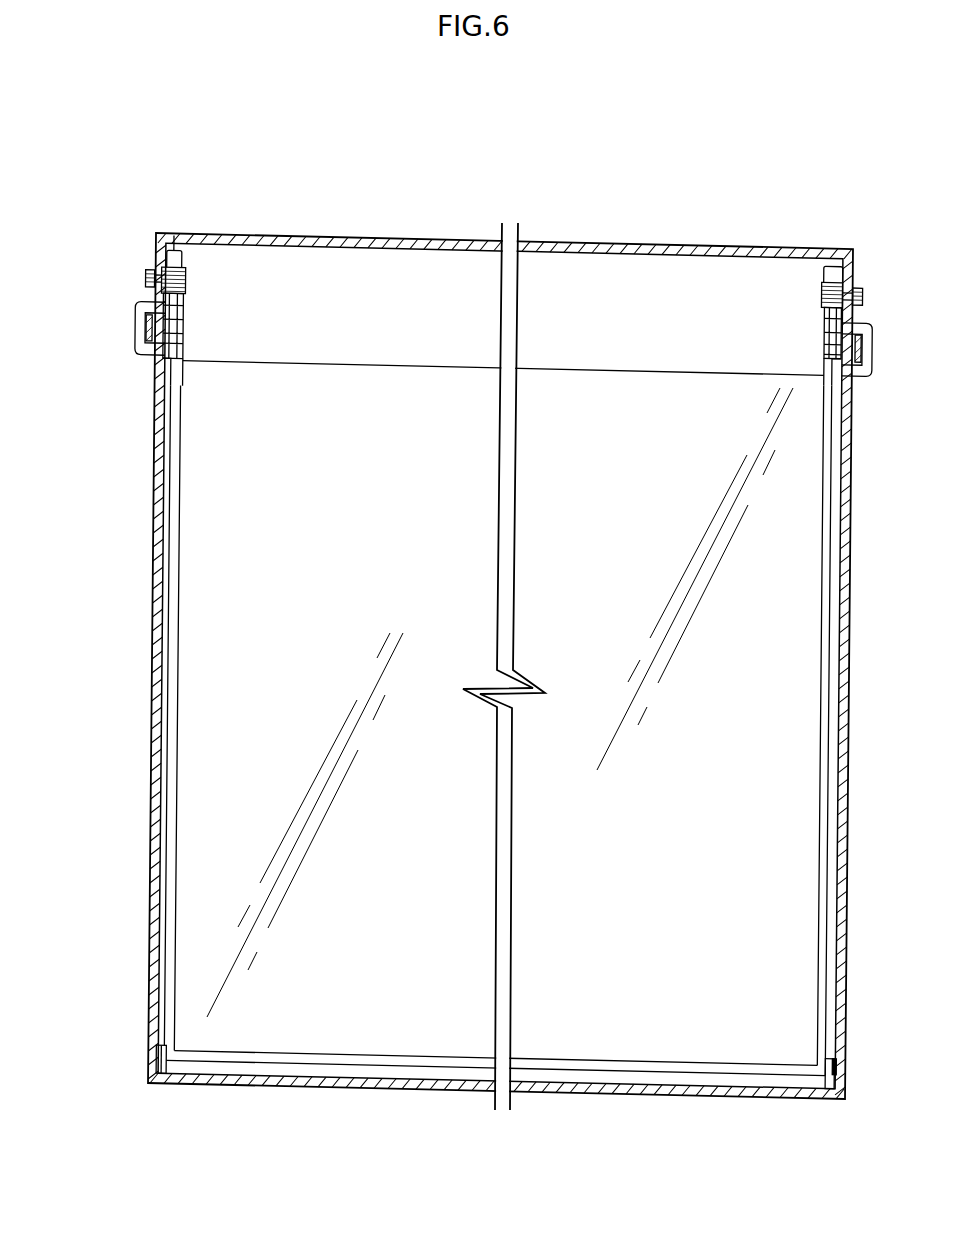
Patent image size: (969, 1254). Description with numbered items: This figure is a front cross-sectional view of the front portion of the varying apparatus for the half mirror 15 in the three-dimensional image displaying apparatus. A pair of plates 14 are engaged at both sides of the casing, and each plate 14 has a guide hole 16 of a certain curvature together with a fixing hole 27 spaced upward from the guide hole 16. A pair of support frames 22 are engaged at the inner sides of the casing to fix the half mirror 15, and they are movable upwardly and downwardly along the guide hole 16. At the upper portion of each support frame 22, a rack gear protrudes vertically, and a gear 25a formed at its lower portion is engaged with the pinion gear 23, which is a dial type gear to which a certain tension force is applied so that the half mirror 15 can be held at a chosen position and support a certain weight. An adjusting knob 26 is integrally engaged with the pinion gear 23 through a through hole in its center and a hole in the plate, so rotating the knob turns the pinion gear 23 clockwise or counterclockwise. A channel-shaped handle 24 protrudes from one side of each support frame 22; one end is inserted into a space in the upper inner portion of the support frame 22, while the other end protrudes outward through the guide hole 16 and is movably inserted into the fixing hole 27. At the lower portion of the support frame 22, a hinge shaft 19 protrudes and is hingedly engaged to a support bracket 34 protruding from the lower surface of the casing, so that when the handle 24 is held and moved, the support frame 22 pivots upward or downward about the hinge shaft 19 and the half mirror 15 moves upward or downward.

The plate 14 is at (150, 505).
The half mirror 15 is at (200, 568).
The guide hole 16 is at (152, 358).
The hinge shaft 19 is at (165, 1062).
The support frame 22 is at (168, 1032).
The pinion gear 23 is at (157, 268).
The handle 24 is at (133, 340).
The gear 25a is at (175, 250).
The adjusting knob 26 is at (145, 272).
The fixing hole 27 is at (147, 314).
The support bracket 34 is at (157, 1068).